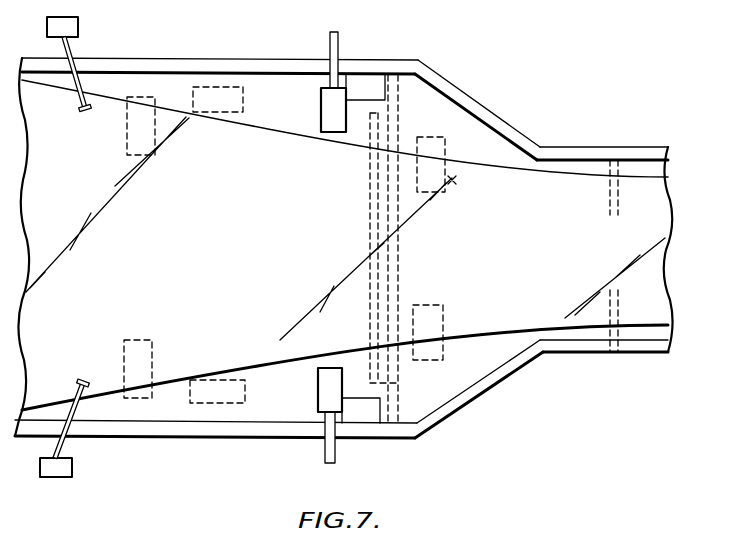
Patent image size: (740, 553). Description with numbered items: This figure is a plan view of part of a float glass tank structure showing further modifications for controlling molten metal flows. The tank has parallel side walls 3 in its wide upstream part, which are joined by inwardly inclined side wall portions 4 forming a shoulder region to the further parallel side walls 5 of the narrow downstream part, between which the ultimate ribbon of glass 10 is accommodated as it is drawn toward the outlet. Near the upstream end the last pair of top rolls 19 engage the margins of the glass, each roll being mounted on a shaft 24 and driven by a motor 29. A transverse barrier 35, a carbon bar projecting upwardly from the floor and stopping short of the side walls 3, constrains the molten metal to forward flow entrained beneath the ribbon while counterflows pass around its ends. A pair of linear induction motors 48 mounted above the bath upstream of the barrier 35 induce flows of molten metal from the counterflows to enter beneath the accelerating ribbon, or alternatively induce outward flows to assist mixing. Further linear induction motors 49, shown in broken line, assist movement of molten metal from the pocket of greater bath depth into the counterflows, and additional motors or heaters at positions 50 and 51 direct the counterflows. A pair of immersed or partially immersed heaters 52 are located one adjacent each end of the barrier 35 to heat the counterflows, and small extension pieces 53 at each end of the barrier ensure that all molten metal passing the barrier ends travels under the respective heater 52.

The side walls 3 is at (214, 59).
The inwardly inclined side wall portions 4 is at (485, 105).
The further parallel side walls 5 is at (600, 152).
The ultimate ribbon of glass 10 is at (645, 305).
The top rolls 19 is at (87, 112).
The shaft 24 is at (73, 52).
The motor 29 is at (78, 22).
The transverse barrier 35 is at (370, 212).
The linear induction motors 48 is at (320, 122).
The linear induction motors 49 is at (452, 183).
The linear induction motor position 50 is at (243, 100).
The linear induction motor position 51 is at (128, 155).
The heaters 52 is at (387, 75).
The extension pieces 53 is at (400, 380).